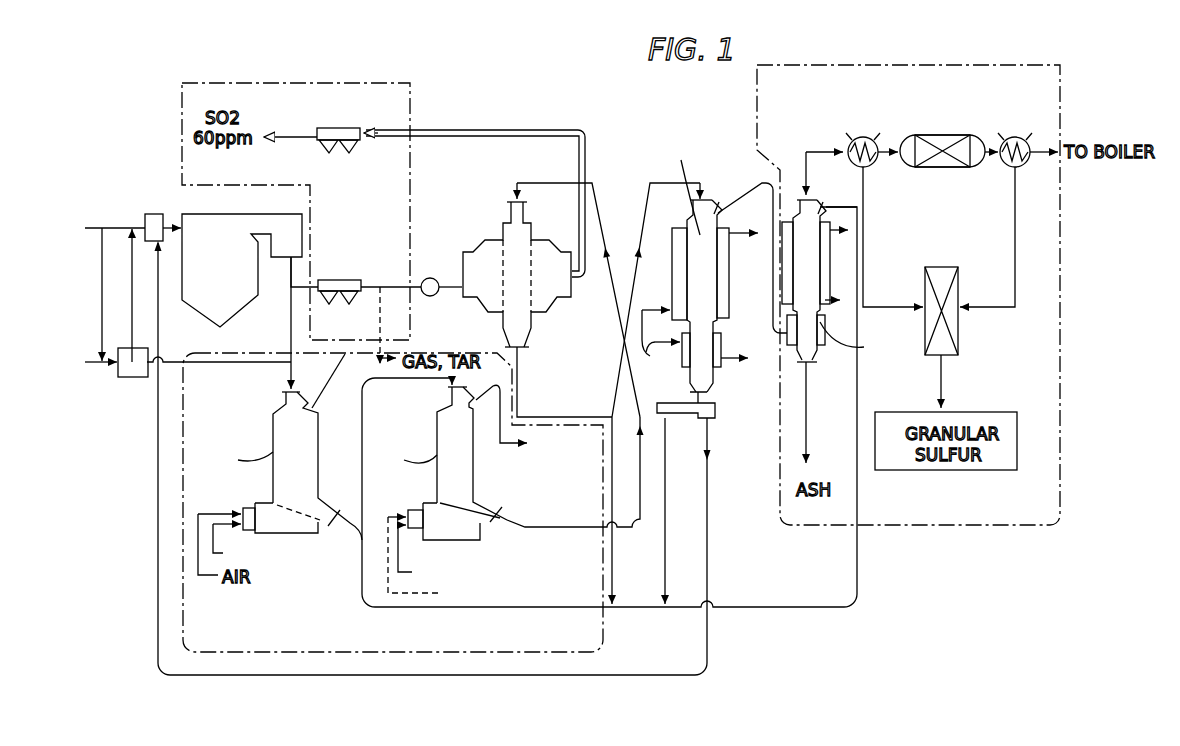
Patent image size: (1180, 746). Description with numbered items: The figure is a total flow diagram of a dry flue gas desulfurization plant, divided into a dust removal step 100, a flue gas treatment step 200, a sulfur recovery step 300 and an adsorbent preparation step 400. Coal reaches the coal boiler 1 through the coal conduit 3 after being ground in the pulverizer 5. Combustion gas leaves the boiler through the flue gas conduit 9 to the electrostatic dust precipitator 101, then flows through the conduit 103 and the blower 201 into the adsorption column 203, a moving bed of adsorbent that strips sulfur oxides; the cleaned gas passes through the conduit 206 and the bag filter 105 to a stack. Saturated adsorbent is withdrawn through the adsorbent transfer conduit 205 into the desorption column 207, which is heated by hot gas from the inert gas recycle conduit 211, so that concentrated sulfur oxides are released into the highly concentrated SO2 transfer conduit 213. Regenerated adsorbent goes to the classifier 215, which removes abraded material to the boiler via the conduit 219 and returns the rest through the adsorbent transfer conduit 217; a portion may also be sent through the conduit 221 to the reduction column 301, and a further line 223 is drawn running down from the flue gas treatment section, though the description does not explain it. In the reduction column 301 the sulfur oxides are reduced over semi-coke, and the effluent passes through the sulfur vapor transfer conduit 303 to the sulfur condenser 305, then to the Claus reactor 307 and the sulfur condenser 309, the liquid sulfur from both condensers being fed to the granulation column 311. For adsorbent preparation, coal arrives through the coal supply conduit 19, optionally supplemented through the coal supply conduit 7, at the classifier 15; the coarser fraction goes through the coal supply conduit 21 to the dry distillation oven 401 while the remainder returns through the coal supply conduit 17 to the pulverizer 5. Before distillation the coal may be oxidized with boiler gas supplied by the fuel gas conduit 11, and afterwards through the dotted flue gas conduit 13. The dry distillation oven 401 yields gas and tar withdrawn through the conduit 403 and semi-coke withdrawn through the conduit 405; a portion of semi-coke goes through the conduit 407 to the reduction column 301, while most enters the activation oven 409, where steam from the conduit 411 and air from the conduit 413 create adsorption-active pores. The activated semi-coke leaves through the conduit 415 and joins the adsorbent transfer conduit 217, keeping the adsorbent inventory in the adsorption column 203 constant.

The coal boiler 1 is at (216, 214).
The coal conduit 3 is at (112, 228).
The pulverizer 5 is at (152, 214).
The coal supply conduit 7 is at (102, 285).
The flue gas conduit 9 is at (291, 283).
The fuel gas conduit 11 is at (291, 328).
The flue gas conduit 13 is at (378, 302).
The classifier 15 is at (133, 378).
The coal supply conduit 17 is at (132, 322).
The coal supply conduit 19 is at (95, 365).
The coal supply conduit 21 is at (224, 363).
The dust removal step 100 is at (322, 64).
The electrostatic dust precipitator 101 is at (335, 280).
The conduit 103 is at (392, 286).
The bag filter 105 is at (338, 128).
The flue gas treatment step 200 is at (585, 101).
The blower 201 is at (430, 278).
The adsorption column 203 is at (475, 250).
The adsorbent transfer conduit 205 is at (646, 210).
The conduit 206 is at (515, 130).
The desorption column 207 is at (709, 199).
The inert gas recycle conduit 211 is at (657, 343).
The highly concentrated SO2 transfer conduit 213 is at (772, 298).
The classifier 215 is at (715, 410).
The adsorbent transfer conduit 217 is at (592, 183).
The conduit 219 is at (633, 675).
The conduit 221 is at (667, 488).
The discharge line 223 is at (613, 562).
The sulfur recovery step 300 is at (893, 65).
The reduction column 301 is at (826, 255).
The sulfur vapor transfer conduit 303 is at (806, 152).
The sulfur condenser 305 is at (868, 137).
The Claus reactor 307 is at (930, 167).
The sulfur condenser 309 is at (1006, 165).
The granulation column 311 is at (933, 267).
The adsorbent preparation step 400 is at (490, 695).
The dry distillation oven 401 is at (273, 410).
The conduit 403 is at (321, 380).
The conduit 405 is at (364, 398).
The conduit 407 is at (641, 607).
The activation oven 409 is at (473, 445).
The conduit 411 is at (248, 544).
The conduit 413 is at (432, 593).
The conduit 415 is at (640, 503).